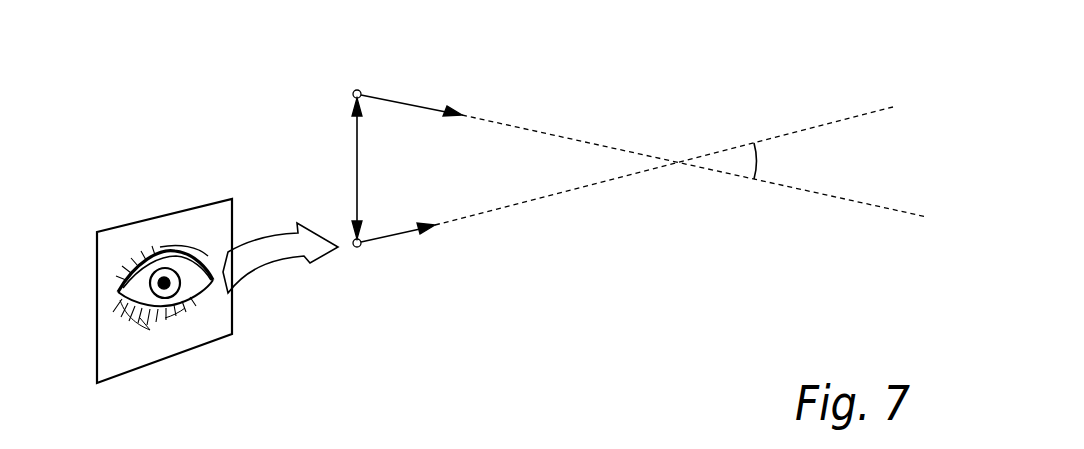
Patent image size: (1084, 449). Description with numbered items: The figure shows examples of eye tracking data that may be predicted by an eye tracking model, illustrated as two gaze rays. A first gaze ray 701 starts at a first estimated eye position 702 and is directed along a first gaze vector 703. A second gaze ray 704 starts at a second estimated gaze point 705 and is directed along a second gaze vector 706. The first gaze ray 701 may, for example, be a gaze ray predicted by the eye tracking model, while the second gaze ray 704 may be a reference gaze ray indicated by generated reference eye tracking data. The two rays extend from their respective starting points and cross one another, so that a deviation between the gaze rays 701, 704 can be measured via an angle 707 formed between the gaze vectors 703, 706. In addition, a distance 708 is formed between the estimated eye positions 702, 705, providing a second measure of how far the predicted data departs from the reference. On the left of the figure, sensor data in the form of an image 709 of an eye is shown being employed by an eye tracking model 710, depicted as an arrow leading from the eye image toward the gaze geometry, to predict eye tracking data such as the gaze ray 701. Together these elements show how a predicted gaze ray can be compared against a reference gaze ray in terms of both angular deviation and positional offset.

The first gaze ray 701 is at (560, 193).
The first estimated eye position 702 is at (358, 255).
The first gaze vector 703 is at (397, 237).
The second gaze ray 704 is at (570, 138).
The second estimated gaze point 705 is at (358, 90).
The second gaze vector 706 is at (422, 107).
The angle 707 is at (757, 165).
The distance 708 is at (357, 155).
The image of an eye 709 is at (158, 215).
The eye tracking model 710 is at (265, 238).